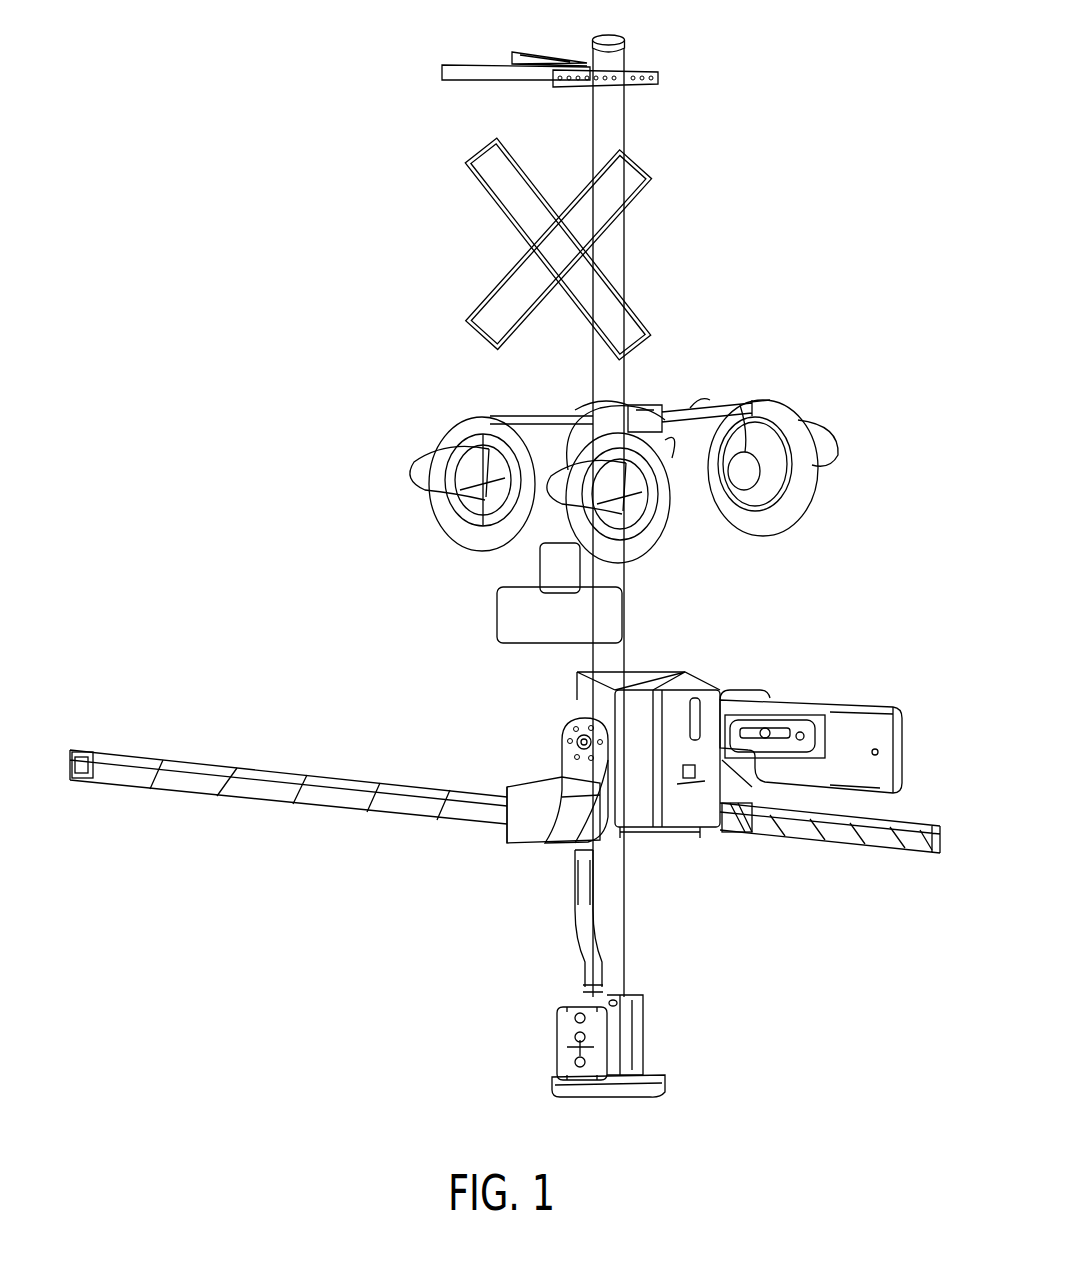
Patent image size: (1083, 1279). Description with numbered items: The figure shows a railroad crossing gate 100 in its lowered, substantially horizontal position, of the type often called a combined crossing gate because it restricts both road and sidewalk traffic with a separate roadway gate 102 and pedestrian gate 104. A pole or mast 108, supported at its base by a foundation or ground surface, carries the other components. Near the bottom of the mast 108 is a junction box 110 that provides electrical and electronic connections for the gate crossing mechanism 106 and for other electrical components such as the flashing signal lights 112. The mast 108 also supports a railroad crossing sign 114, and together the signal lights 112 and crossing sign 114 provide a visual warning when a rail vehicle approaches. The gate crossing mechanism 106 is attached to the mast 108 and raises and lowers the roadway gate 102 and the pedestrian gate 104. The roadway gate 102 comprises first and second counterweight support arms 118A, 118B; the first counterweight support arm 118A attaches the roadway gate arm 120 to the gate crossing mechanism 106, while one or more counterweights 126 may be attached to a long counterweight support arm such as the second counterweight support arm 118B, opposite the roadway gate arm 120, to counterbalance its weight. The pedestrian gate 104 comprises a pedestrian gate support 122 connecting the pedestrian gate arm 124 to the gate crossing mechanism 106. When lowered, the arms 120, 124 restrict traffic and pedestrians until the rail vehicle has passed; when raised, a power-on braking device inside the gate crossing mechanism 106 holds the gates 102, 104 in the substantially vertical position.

The railroad crossing gate 100 is at (270, 93).
The roadway gate 102 is at (363, 847).
The pedestrian gate 104 is at (803, 867).
The gate crossing mechanism 106 is at (668, 672).
The mast 108 is at (627, 40).
The junction box 110 is at (557, 1047).
The flashing signal lights 112 is at (448, 438).
The railroad crossing sign 114 is at (478, 157).
The first counterweight support arm 118A is at (542, 852).
The second counterweight support arm 118B is at (793, 703).
The roadway gate arm 120 is at (213, 785).
The pedestrian gate support 122 is at (735, 822).
The pedestrian gate arm 124 is at (937, 848).
The counterweights 126 is at (900, 762).